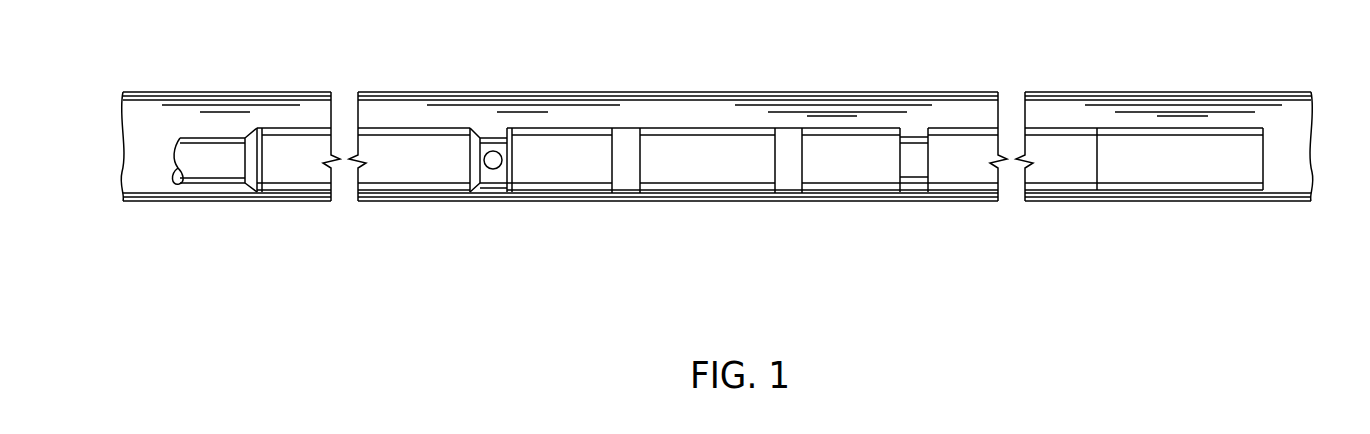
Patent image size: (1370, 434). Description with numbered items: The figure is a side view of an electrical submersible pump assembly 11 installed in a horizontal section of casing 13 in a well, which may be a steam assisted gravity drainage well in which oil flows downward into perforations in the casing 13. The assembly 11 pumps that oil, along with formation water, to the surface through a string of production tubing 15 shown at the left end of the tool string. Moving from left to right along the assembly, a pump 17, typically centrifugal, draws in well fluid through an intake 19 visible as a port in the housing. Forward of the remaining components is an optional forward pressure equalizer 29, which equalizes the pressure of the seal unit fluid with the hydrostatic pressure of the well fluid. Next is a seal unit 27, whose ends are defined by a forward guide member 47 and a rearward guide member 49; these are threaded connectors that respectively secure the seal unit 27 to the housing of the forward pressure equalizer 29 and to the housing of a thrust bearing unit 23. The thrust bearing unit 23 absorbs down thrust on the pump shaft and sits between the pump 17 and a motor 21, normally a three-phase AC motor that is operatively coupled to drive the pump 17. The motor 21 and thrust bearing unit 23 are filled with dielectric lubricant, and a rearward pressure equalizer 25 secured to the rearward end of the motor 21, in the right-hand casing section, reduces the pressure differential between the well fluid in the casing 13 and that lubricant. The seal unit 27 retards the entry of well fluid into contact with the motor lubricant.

The electrical submersible pump assembly 11 is at (676, 118).
The casing 13 is at (620, 92).
The production tubing 15 is at (198, 157).
The pump 17 is at (420, 173).
The intake 19 is at (493, 167).
The motor 21 is at (940, 143).
The thrust bearing unit 23 is at (883, 170).
The rearward pressure equalizer 25 is at (1186, 172).
The seal unit 27 is at (740, 172).
The forward pressure equalizer 29 is at (582, 172).
The forward guide member 47 is at (628, 173).
The rearward guide member 49 is at (792, 175).